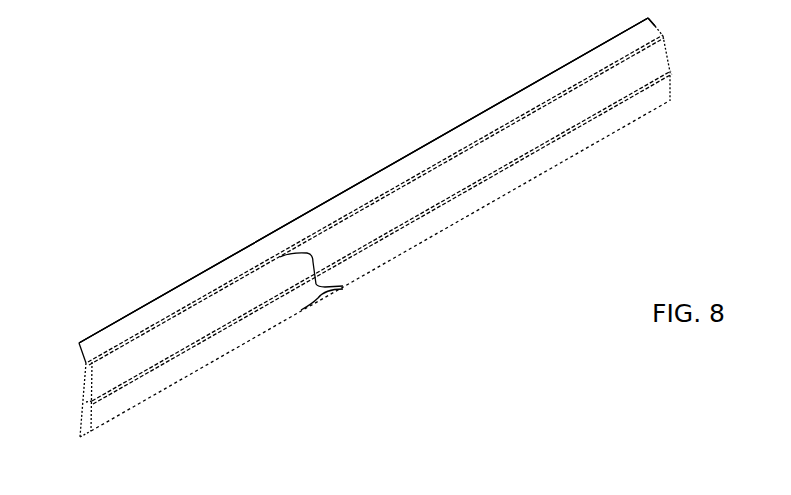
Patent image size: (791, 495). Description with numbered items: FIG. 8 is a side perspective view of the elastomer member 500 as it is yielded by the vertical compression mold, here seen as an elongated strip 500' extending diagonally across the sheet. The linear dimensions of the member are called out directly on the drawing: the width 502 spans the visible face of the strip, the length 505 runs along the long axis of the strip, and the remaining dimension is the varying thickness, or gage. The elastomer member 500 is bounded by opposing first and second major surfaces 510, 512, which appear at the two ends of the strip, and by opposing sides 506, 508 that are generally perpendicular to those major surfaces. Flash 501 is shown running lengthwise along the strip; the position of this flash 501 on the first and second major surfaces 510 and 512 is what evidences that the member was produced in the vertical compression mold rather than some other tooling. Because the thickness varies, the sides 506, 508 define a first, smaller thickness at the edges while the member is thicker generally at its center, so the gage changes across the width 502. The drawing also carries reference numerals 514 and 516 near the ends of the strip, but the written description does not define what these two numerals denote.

The strip 500' is at (367, 180).
The elastomer member 500 is at (363, 180).
The flash 501 is at (572, 127).
The width 502 is at (341, 292).
The length 505 is at (362, 182).
The side 506 is at (495, 198).
The side 508 is at (84, 356).
The first major surface 510 is at (637, 113).
The second major surface 512 is at (83, 378).
The top right corner 514 is at (667, 47).
The bottom edge gage 516 is at (81, 431).